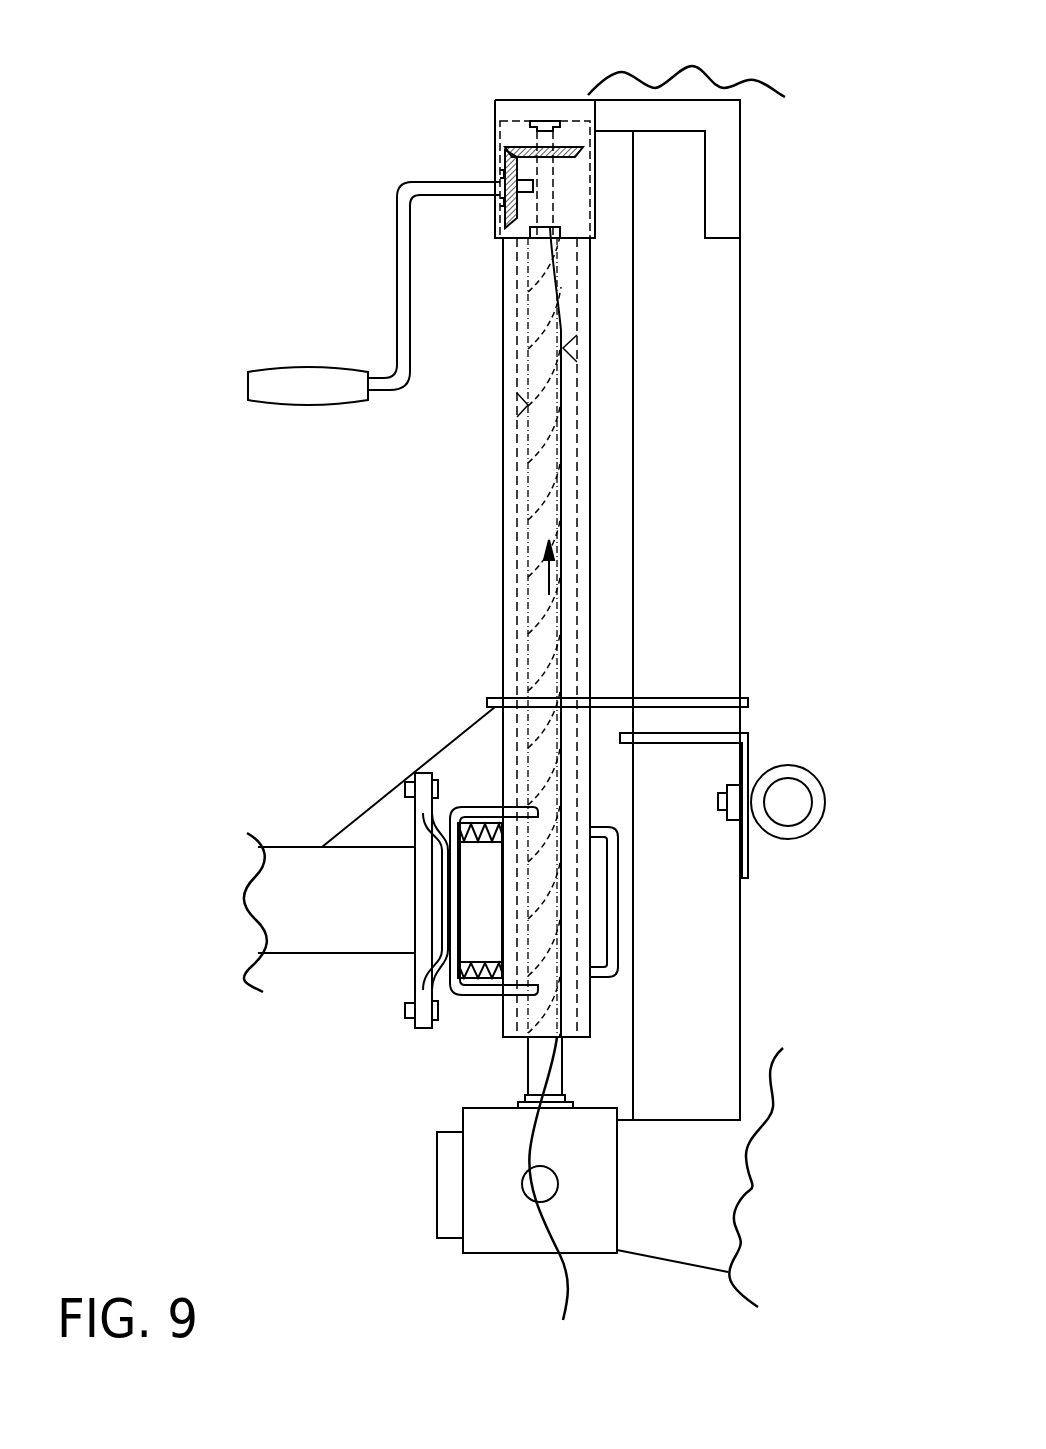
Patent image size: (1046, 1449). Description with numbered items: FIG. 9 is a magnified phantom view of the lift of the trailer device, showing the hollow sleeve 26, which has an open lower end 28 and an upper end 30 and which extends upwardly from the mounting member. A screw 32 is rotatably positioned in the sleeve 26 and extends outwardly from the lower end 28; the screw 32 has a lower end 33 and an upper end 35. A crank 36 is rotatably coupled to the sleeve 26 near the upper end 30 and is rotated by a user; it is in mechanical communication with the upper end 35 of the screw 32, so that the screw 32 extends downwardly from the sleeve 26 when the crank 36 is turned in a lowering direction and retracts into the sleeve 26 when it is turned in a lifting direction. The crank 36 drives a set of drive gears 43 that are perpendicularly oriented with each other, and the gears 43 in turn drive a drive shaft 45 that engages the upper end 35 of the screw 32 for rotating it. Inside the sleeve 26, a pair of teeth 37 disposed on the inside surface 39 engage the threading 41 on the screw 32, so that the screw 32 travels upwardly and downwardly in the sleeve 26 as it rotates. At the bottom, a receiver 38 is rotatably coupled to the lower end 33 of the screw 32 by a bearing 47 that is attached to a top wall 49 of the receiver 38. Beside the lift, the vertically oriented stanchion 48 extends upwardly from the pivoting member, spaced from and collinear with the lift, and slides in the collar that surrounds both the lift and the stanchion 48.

The sleeve 26 is at (503, 473).
The lower end 28 is at (503, 1037).
The upper end 30 is at (569, 121).
The screw 32 is at (527, 1078).
The lower end 33 is at (557, 1204).
The upper end 35 is at (532, 225).
The crank 36 is at (398, 256).
The teeth 37 is at (564, 348).
The receiver 38 is at (490, 1255).
The inside surface 39 is at (517, 513).
The threading 41 is at (549, 590).
The set of drive gears 43 is at (505, 157).
The drive shaft 45 is at (535, 142).
The bearing 47 is at (517, 1103).
The stanchion 48 is at (741, 416).
The top wall 49 is at (593, 1105).